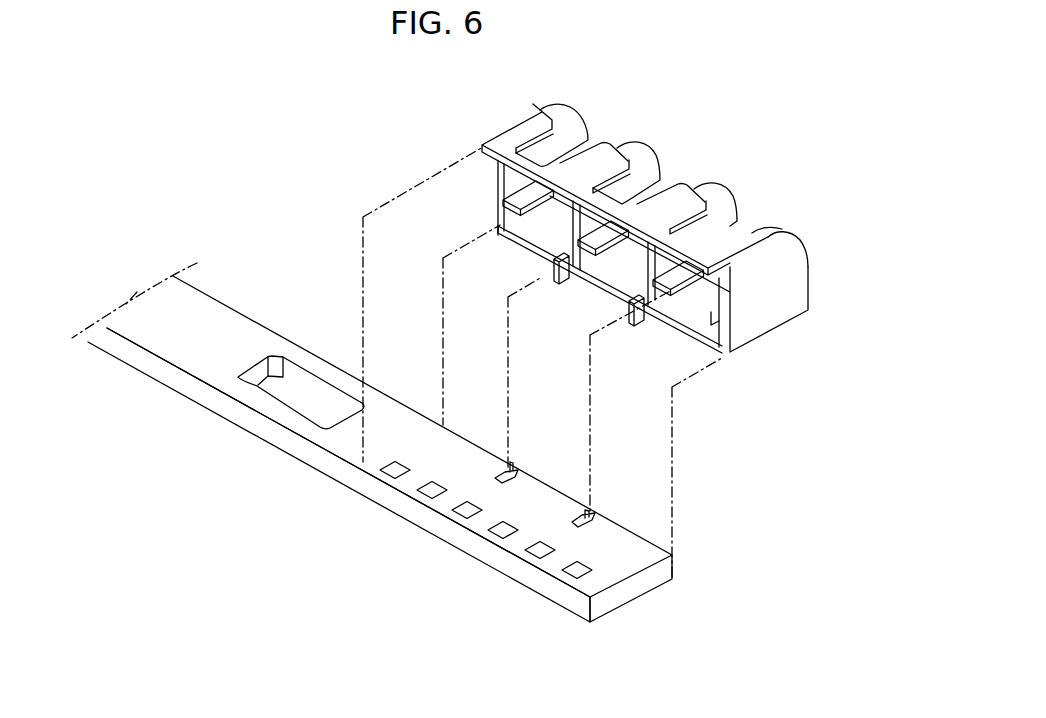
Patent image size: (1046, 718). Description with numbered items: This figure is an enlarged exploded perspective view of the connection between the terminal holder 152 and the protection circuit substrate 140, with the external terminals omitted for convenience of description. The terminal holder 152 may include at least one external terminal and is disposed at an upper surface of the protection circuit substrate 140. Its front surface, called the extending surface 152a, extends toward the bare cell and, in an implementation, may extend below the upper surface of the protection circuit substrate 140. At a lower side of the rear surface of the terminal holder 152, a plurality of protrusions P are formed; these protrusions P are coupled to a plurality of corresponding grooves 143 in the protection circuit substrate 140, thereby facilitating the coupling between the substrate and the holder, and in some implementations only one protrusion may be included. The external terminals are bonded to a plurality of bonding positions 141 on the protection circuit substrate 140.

The protection circuit substrate 140 is at (662, 565).
The bonding positions 141 is at (460, 513).
The grooves 143 is at (592, 513).
The terminal holder 152 is at (767, 315).
The extending surface 152a is at (512, 137).
The protrusions P is at (568, 273).